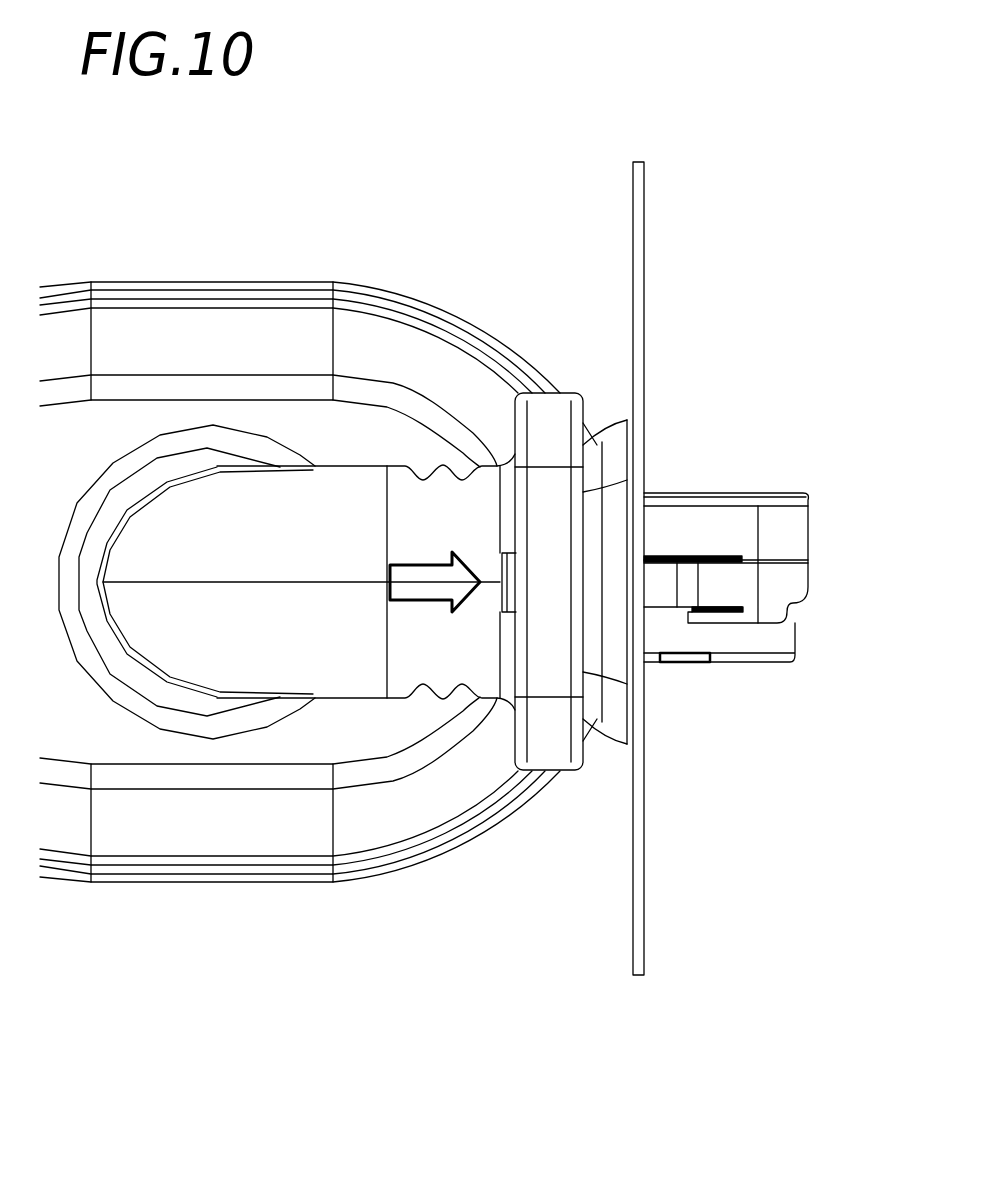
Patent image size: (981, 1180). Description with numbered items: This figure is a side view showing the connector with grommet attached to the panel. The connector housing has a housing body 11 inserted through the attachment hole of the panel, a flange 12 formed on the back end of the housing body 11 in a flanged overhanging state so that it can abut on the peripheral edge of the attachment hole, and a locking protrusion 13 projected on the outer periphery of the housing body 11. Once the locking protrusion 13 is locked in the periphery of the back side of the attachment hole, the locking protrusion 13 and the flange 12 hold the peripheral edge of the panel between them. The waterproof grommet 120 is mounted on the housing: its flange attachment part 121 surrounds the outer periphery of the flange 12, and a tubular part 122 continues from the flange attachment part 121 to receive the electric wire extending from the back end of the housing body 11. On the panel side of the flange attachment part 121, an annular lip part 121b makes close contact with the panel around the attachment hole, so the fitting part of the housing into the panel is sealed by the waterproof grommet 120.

The housing body 11 is at (736, 552).
The flange 12 is at (545, 733).
The locking protrusion 13 is at (662, 593).
The waterproof grommet 120 is at (253, 505).
The flange attachment part 121 is at (542, 423).
The lip part 121b is at (620, 430).
The tubular part 122 is at (420, 683).